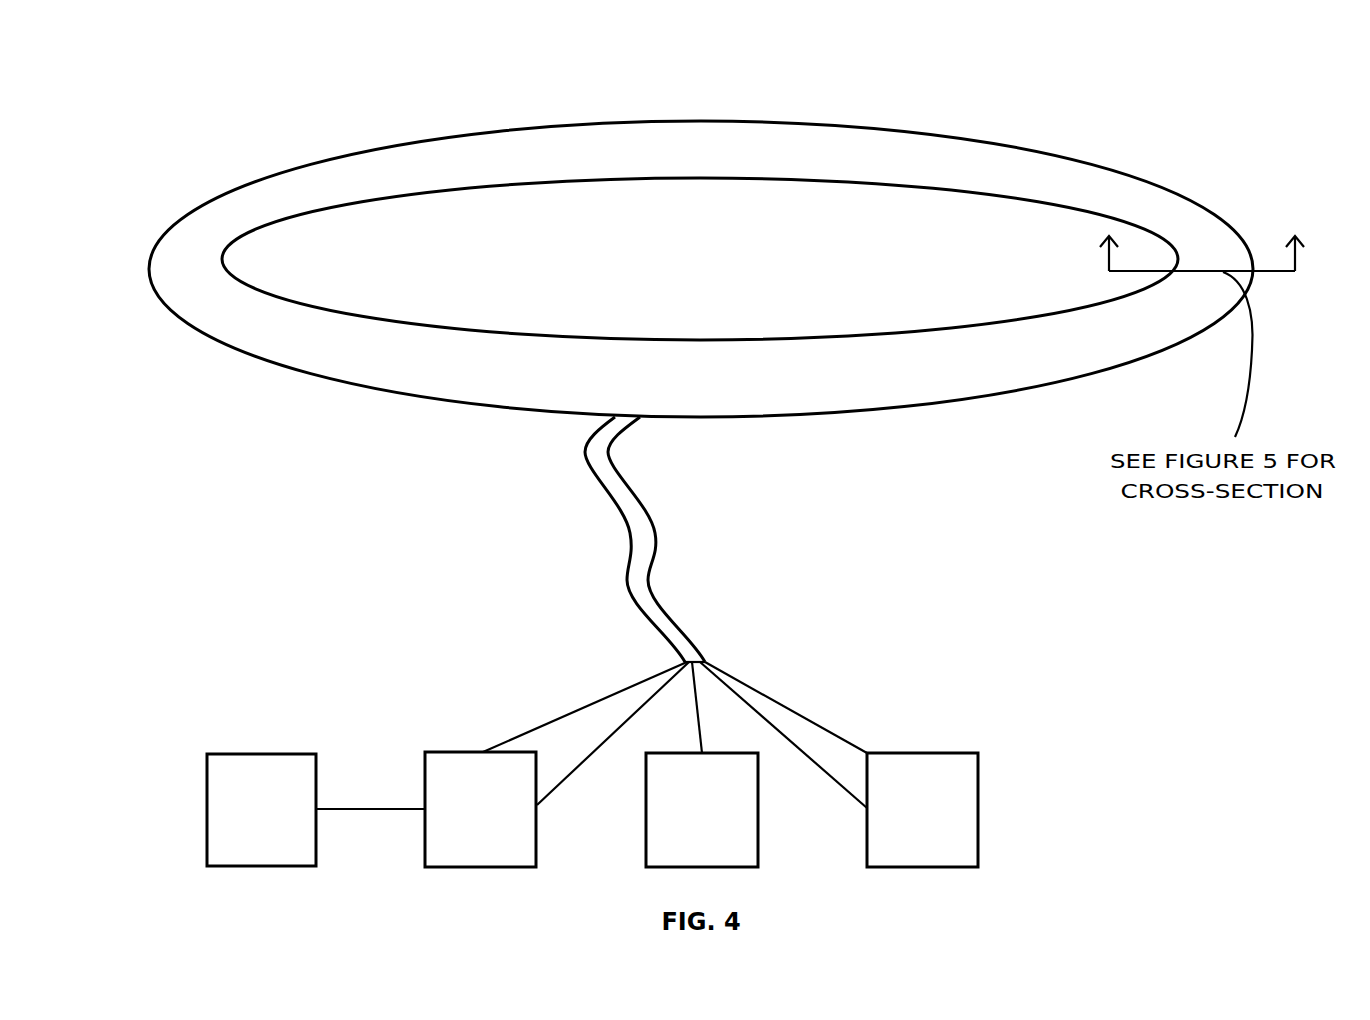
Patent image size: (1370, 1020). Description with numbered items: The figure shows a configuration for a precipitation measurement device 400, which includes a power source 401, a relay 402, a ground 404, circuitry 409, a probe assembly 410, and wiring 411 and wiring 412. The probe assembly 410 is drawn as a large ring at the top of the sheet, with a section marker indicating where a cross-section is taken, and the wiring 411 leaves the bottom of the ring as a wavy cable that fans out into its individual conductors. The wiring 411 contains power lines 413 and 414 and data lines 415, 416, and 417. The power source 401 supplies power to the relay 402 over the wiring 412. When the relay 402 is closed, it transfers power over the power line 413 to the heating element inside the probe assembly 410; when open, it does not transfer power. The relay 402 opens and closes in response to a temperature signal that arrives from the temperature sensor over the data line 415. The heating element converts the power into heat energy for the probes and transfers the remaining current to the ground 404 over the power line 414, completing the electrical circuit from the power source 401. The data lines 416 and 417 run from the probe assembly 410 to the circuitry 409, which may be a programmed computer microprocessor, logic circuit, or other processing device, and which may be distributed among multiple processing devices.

The precipitation measurement device 400 is at (1128, 45).
The probe assembly 410 is at (975, 138).
The wiring 411 is at (656, 529).
The power source 401 is at (261, 810).
The relay 402 is at (480, 809).
The ground 404 is at (702, 810).
The circuitry 409 is at (922, 810).
The wiring 412 is at (338, 809).
The power line 413 is at (563, 713).
The power line 414 is at (702, 734).
The data line 415 is at (555, 790).
The data line 416 is at (805, 716).
The data line 417 is at (845, 790).